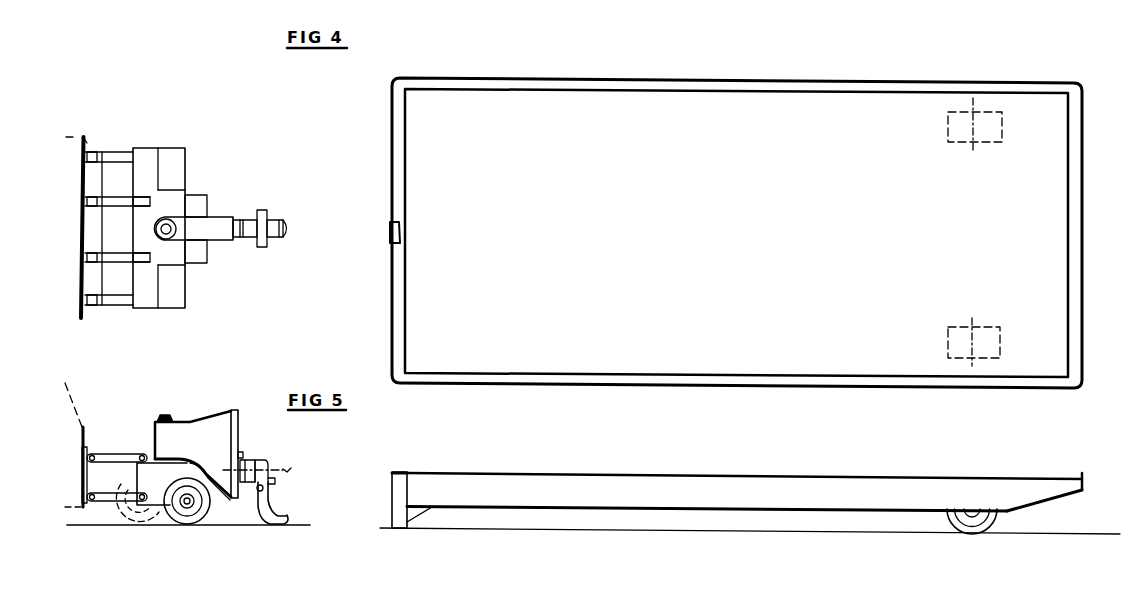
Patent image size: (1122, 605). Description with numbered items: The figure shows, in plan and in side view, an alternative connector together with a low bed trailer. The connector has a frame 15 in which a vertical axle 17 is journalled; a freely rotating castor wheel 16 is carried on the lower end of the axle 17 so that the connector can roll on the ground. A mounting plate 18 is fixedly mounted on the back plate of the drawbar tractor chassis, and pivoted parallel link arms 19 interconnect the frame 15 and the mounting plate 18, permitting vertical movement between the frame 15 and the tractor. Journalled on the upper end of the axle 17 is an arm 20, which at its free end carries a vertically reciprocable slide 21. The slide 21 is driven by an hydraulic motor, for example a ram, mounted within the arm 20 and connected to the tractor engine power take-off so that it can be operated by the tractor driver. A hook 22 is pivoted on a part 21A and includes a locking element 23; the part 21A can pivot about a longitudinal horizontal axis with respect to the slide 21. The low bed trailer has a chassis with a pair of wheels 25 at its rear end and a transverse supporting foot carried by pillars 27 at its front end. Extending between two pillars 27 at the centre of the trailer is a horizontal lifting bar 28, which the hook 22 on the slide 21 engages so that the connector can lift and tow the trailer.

In FIG. 4, the frame 15 is at (150, 160).
In FIG. 5, the frame 15 is at (153, 487).
In FIG. 4, the castor wheel 16 is at (200, 207).
In FIG. 5, the castor wheel 16 is at (185, 511).
In FIG. 4, the vertical axle 17 is at (168, 233).
In FIG. 5, the vertical axle 17 is at (166, 414).
In FIG. 4, the mounting plate 18 is at (84, 137).
In FIG. 5, the mounting plate 18 is at (84, 508).
In FIG. 4, the parallel link arms 19 is at (108, 257).
In FIG. 5, the parallel link arms 19 is at (112, 460).
In FIG. 4, the arm 20 is at (207, 225).
In FIG. 5, the arm 20 is at (222, 437).
In FIG. 4, the slide 21 is at (238, 241).
In FIG. 5, the slide 21 is at (243, 455).
In FIG. 4, the part 21A is at (272, 238).
In FIG. 5, the part 21A is at (268, 467).
In FIG. 4, the hook 22 is at (288, 230).
In FIG. 5, the hook 22 is at (268, 514).
In FIG. 4, the locking element 23 is at (263, 216).
In FIG. 5, the locking element 23 is at (275, 481).
In FIG. 4, the wheels 25 is at (963, 337).
In FIG. 5, the wheels 25 is at (987, 528).
In FIG. 5, the pillars 27 is at (392, 515).
In FIG. 4, the lifting bar 28 is at (392, 222).